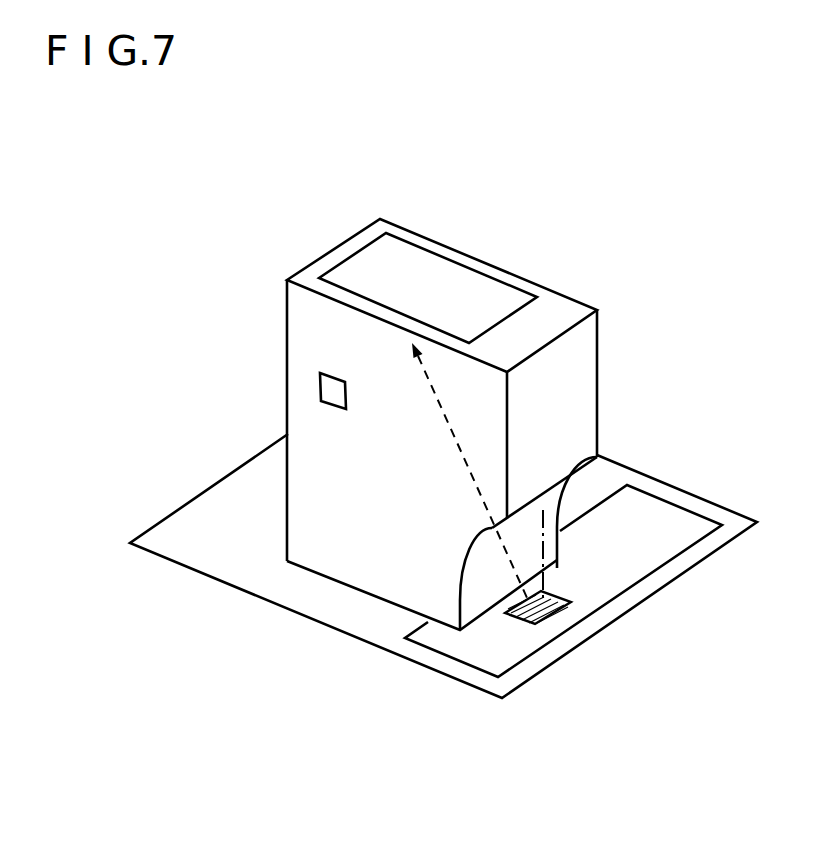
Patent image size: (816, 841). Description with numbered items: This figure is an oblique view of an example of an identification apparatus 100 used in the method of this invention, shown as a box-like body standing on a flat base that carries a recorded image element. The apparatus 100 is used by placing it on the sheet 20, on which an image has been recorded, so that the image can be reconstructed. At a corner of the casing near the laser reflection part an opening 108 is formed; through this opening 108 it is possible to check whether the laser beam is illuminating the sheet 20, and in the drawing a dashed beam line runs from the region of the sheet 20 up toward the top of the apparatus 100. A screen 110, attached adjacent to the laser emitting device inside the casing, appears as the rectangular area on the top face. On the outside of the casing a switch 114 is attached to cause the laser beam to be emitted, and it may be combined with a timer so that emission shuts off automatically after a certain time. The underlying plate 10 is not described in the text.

The base plate 10 is at (592, 594).
The sheet 20 is at (520, 622).
The identification apparatus 100 is at (566, 287).
The opening 108 is at (558, 543).
The screen 110 is at (433, 270).
The switch 114 is at (323, 389).